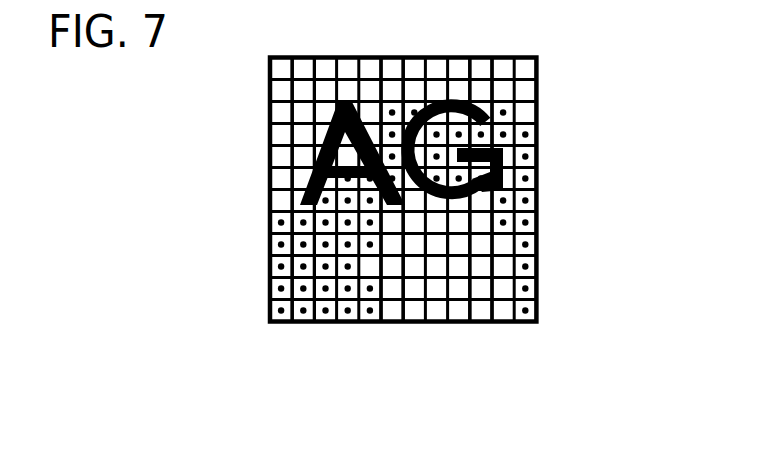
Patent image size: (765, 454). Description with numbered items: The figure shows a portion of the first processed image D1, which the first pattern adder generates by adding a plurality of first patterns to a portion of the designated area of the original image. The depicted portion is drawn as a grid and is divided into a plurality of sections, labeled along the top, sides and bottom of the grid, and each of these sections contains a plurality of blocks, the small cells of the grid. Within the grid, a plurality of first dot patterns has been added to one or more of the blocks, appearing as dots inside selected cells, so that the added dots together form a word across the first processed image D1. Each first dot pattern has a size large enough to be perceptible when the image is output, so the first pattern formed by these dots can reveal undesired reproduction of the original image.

The first processed image D1 is at (580, 88).